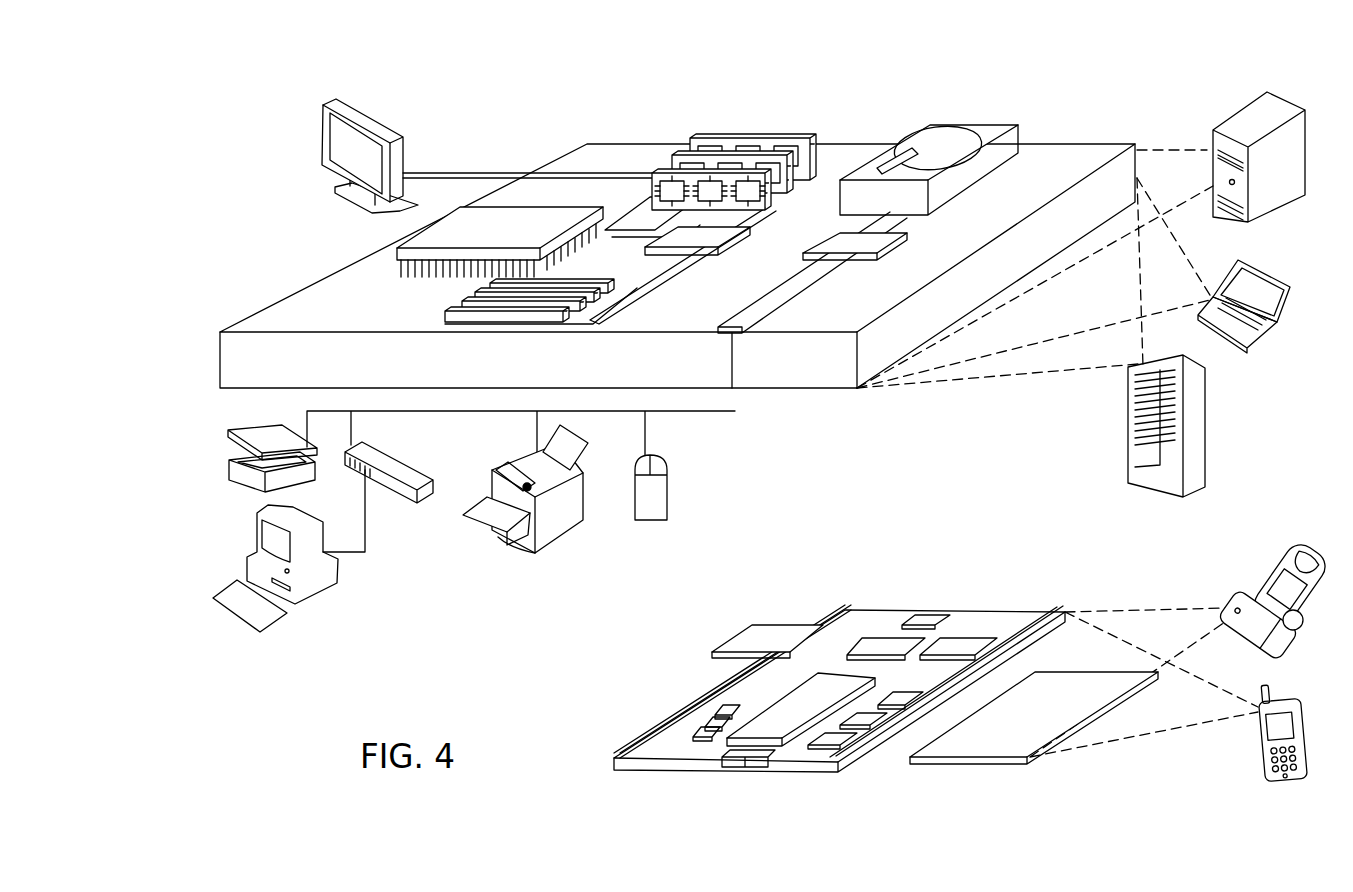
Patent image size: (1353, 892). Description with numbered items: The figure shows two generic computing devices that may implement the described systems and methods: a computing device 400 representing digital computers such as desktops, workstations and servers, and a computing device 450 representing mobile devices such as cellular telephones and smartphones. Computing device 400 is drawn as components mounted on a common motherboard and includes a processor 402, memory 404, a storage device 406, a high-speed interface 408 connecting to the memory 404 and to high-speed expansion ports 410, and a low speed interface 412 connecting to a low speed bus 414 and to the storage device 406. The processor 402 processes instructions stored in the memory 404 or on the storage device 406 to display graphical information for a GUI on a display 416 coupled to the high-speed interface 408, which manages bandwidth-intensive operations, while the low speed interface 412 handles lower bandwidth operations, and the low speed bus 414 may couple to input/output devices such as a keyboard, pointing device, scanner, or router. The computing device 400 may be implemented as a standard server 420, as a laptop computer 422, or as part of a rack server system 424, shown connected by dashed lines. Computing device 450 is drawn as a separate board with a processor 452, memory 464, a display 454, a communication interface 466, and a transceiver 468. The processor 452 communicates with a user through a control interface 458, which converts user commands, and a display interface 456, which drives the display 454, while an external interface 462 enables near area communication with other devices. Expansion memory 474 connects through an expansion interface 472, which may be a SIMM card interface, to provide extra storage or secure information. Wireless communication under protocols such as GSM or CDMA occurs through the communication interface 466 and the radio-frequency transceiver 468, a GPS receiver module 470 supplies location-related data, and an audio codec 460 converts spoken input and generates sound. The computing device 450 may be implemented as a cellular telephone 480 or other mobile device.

The computing device 400 is at (505, 122).
The processor 402 is at (367, 262).
The memory 404 is at (703, 138).
The storage device 406 is at (920, 128).
The high-speed interface 408 is at (677, 240).
The high-speed expansion ports 410 is at (467, 298).
The low speed interface 412 is at (857, 243).
The low speed bus 414 is at (742, 334).
The display 416 is at (322, 108).
The standard server 420 is at (1213, 138).
The laptop computer 422 is at (1238, 262).
The rack server system 424 is at (1128, 448).
The computing device 450 is at (822, 595).
The processor 452 is at (770, 750).
The display 454 is at (1033, 757).
The display interface 456 is at (845, 758).
The control interface 458 is at (875, 728).
The audio codec 460 is at (897, 700).
The external interface 462 is at (744, 766).
The memory 464 is at (700, 724).
The communication interface 466 is at (888, 646).
The transceiver 468 is at (958, 648).
The GPS receiver module 470 is at (933, 618).
The expansion interface 472 is at (826, 622).
The expansion memory 474 is at (752, 624).
The cellular telephone 480 is at (1285, 560).